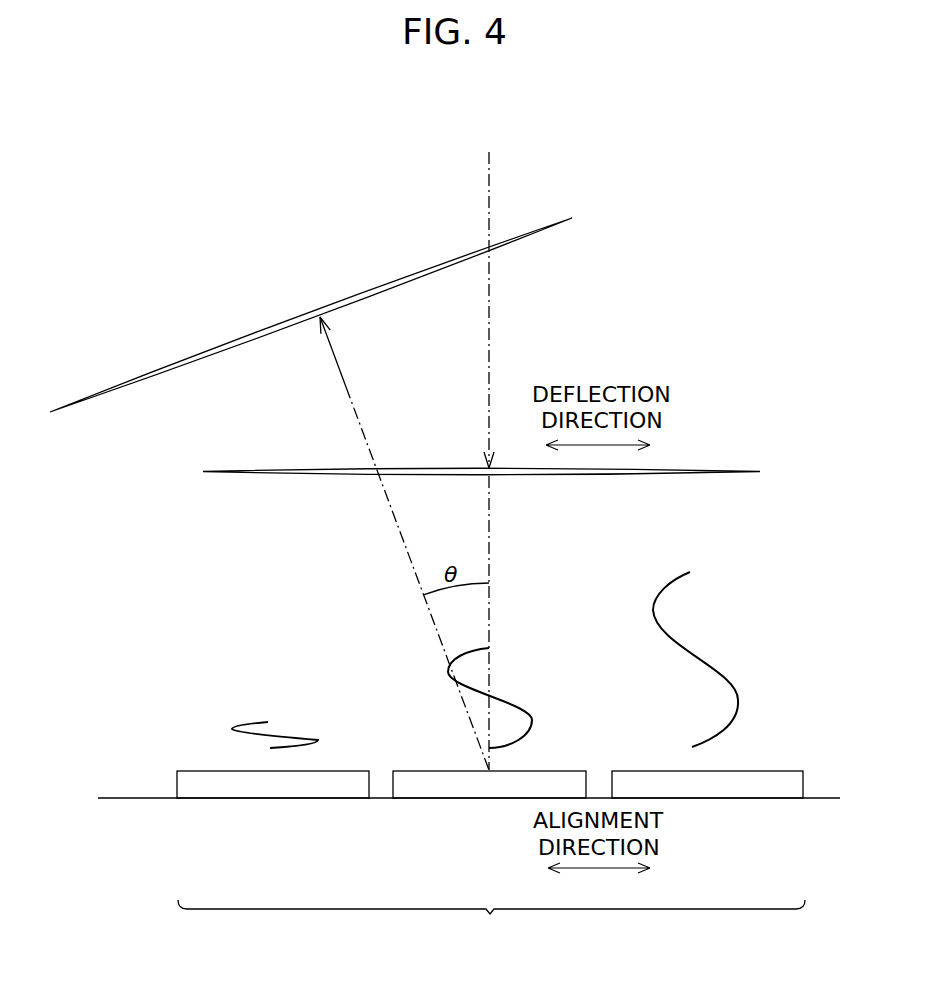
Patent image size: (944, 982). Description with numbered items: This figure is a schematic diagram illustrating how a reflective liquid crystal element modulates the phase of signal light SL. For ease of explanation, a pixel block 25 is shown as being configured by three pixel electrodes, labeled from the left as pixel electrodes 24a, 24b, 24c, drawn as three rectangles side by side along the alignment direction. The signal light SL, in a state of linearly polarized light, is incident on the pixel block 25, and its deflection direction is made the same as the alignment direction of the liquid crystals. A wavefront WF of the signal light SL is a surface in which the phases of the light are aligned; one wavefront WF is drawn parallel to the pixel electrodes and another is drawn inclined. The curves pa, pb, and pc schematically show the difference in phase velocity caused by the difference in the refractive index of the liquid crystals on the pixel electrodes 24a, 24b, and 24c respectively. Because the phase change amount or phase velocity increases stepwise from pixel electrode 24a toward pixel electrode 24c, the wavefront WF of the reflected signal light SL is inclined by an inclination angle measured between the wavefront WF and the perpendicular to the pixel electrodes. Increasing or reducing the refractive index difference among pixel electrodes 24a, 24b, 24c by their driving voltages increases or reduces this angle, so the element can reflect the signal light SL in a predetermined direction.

The signal light SL is at (489, 330).
The wavefront WF is at (540, 233).
The phase velocity difference on pixel electrode 24a pa is at (318, 740).
The phase velocity difference on pixel electrode 24b pb is at (503, 694).
The phase velocity difference on pixel electrode 24c pc is at (712, 664).
The pixel electrode 24a is at (272, 790).
The pixel electrode 24b is at (458, 790).
The pixel electrode 24c is at (725, 788).
The pixel block 25 is at (491, 924).